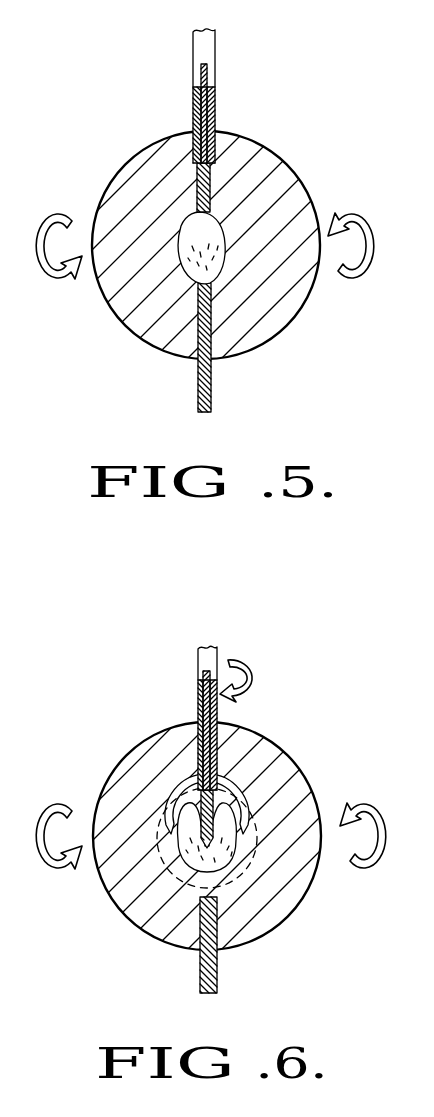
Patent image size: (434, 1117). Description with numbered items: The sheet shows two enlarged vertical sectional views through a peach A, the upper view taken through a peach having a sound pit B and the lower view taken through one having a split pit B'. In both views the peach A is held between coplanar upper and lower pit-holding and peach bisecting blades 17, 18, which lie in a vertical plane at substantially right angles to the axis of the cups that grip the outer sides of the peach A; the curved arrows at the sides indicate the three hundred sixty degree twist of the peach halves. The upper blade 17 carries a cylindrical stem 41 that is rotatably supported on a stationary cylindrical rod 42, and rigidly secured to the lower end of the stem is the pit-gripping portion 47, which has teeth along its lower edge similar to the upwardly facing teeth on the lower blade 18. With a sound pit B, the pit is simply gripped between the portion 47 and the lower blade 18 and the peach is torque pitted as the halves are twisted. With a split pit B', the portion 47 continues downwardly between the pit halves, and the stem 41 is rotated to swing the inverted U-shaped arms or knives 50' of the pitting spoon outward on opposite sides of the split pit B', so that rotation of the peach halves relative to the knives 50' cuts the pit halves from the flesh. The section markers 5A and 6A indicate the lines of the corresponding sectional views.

In FIG. 5, the upper pit-holding and peach bisecting blade 17 is at (193, 43).
In FIG. 6, the upper pit-holding and peach bisecting blade 17 is at (198, 651).
In FIG. 5, the lower pit-holding and peach bisecting blade 18 is at (198, 386).
In FIG. 6, the lower pit-holding and peach bisecting blade 18 is at (200, 972).
In FIG. 5, the cylindrical stem 41 is at (215, 111).
In FIG. 6, the cylindrical stem 41 is at (199, 707).
In FIG. 5, the stationary cylindrical rod 42 is at (207, 71).
In FIG. 6, the stationary cylindrical rod 42 is at (204, 678).
In FIG. 5, the pit-gripping portion 47 is at (197, 182).
In FIG. 6, the pit-gripping portion 47 is at (199, 790).
In FIG. 6, the arms or knives of the pitting spoon 50' is at (209, 783).
In FIG. 5, the peach A is at (133, 312).
In FIG. 6, the peach A is at (116, 889).
In FIG. 5, the pit B is at (168, 295).
In FIG. 6, the split pit B' is at (168, 880).
In FIG. 5, the section line 5A- 5A is at (213, 418).
In FIG. 6, the section line 6A- 6A is at (215, 622).